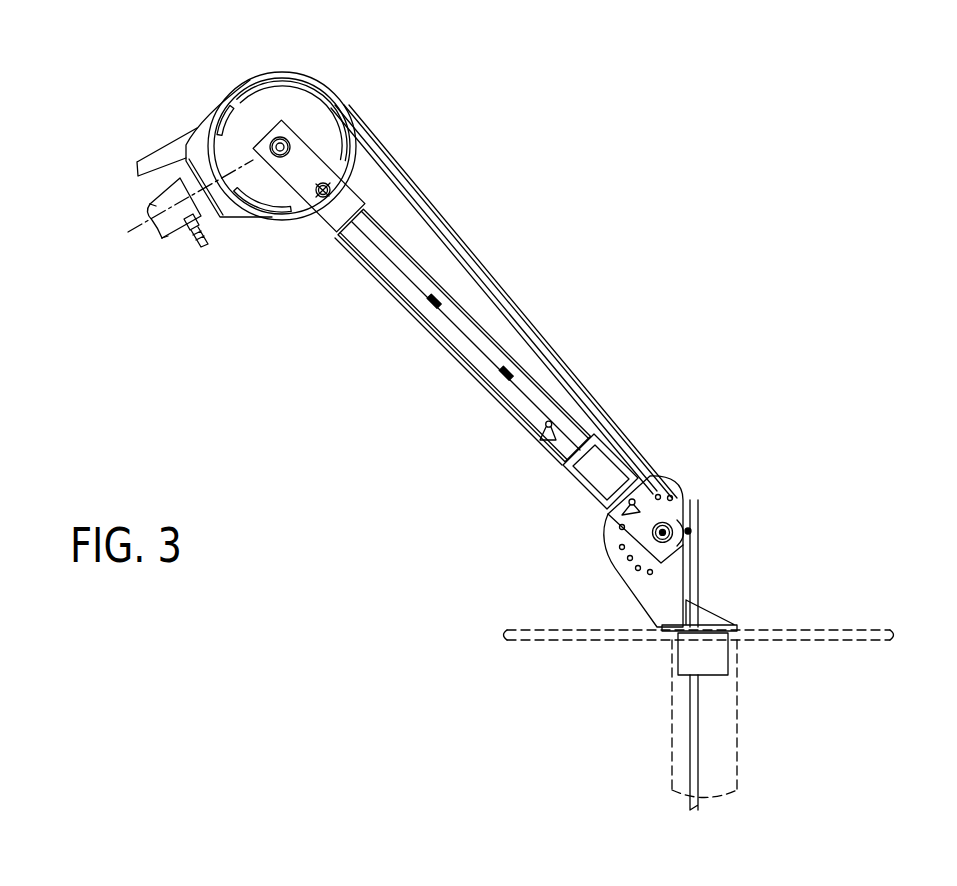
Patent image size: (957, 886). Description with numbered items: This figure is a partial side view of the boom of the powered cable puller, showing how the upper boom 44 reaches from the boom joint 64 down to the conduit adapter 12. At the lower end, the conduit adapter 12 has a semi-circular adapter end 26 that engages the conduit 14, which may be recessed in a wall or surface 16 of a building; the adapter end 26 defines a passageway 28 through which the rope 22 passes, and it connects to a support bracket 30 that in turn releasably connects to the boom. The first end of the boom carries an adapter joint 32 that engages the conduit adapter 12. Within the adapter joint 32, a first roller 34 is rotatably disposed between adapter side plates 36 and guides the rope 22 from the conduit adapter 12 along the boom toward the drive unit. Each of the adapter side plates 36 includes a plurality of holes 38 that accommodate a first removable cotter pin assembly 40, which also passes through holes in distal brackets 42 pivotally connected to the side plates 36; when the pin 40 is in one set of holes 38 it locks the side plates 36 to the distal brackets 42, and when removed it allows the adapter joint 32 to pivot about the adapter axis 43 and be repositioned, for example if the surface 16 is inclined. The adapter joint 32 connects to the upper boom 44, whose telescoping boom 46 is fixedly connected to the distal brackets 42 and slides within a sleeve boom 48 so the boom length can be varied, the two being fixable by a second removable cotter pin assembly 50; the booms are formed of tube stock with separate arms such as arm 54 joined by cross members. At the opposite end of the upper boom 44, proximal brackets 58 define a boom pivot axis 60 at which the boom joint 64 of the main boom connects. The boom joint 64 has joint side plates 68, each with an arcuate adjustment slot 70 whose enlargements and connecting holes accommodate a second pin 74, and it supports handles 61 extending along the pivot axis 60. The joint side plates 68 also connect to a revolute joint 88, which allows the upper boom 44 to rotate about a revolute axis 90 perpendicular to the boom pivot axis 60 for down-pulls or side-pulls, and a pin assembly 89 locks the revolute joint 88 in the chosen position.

The conduit adapter 12 is at (710, 604).
The conduit 14 is at (672, 710).
The surface 16 is at (863, 628).
The rope 22 is at (459, 239).
The adapter end 26 is at (715, 662).
The passageway 28 is at (712, 686).
The support bracket 30 is at (737, 627).
The adapter joint 32 is at (655, 588).
The first roller 34 is at (690, 530).
The adapter side plates 36 is at (660, 480).
The holes 38 is at (619, 548).
The first removable cotter pin assembly 40 is at (633, 499).
The distal brackets 42 is at (668, 528).
The adapter axis 43 is at (673, 533).
The upper boom 44 is at (408, 276).
The telescoping boom 46 is at (597, 470).
The sleeve boom 48 is at (453, 336).
The second removable cotter pin assembly 50 is at (546, 428).
The arm 54 is at (482, 342).
The proximal brackets 58 is at (302, 163).
The boom pivot axis 60 is at (277, 138).
The handles 61 is at (265, 138).
The boom joint 64 is at (287, 214).
The joint side plates 68 is at (210, 150).
The arcuate adjustment slot 70 is at (310, 152).
The second pin 74 is at (331, 190).
The revolute joint 88 is at (172, 228).
The pin assembly 89 is at (208, 246).
The revolute axis 90 is at (180, 192).